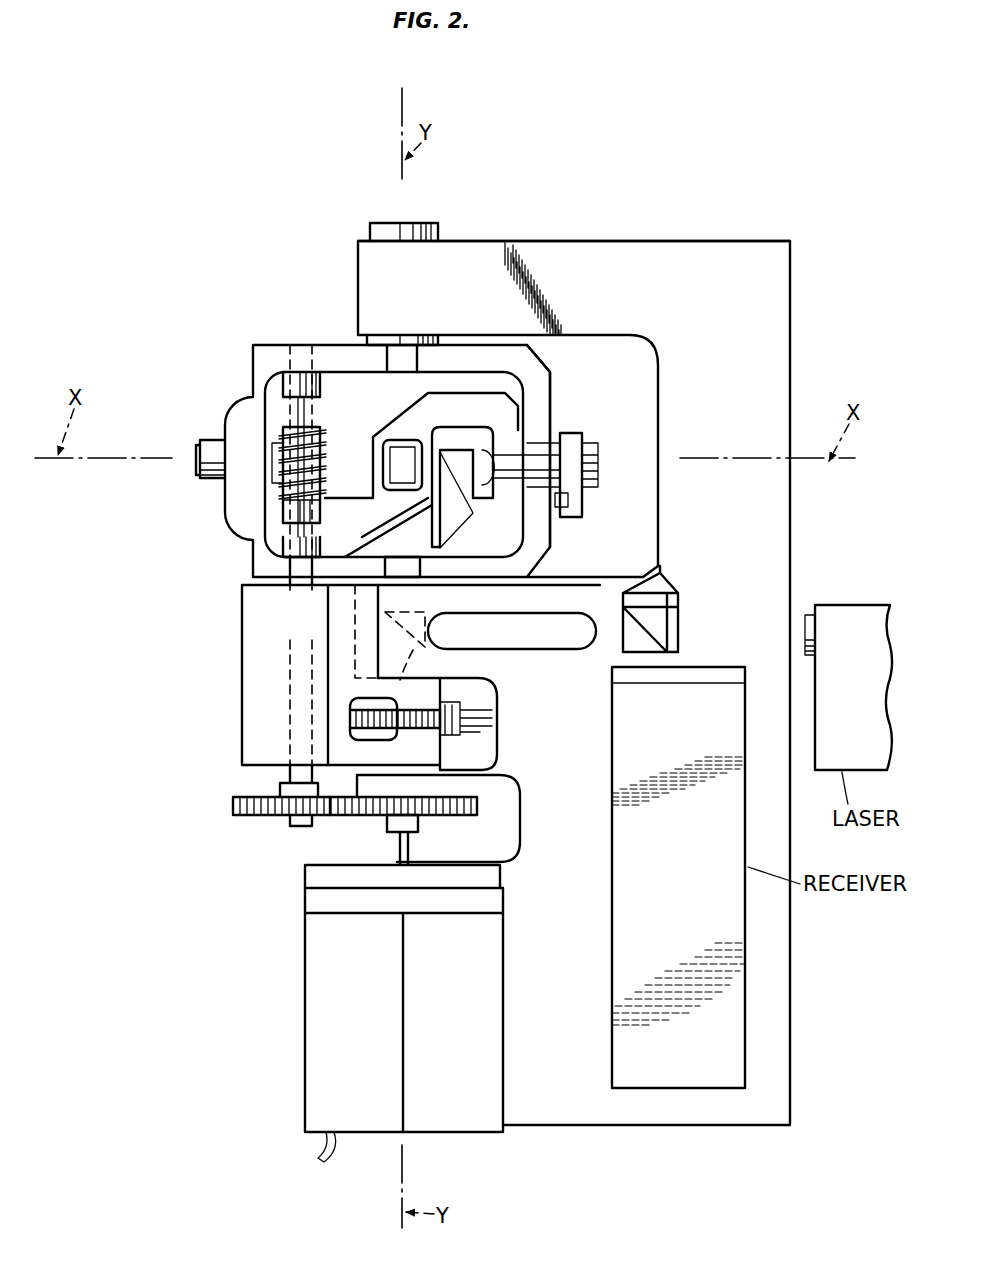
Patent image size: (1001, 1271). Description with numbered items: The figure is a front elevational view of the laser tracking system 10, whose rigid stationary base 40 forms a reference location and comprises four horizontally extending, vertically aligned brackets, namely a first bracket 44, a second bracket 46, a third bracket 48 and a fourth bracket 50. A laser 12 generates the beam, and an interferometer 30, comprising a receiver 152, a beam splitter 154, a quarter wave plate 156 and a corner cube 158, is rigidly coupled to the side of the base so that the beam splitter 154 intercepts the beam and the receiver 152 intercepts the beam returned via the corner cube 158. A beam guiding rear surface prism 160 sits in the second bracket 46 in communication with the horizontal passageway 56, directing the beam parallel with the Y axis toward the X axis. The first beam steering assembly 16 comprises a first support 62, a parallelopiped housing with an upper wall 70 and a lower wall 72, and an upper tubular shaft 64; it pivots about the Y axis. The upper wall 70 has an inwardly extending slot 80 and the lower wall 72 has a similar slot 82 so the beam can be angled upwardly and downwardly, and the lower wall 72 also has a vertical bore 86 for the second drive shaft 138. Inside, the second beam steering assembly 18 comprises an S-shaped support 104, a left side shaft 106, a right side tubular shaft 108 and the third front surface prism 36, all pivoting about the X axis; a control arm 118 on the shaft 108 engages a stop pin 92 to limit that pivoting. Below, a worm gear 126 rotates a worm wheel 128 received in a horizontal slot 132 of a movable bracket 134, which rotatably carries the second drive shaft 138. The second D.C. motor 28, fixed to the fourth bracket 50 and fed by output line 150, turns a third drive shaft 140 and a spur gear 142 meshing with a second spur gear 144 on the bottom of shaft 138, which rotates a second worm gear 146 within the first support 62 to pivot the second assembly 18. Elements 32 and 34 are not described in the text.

The system 10 is at (711, 169).
The laser 12 is at (862, 606).
The first beam steering assembly 16 is at (565, 549).
The second beam steering assembly 18 is at (342, 394).
The second D.C. motor 28 is at (305, 1068).
The interferometer 30 is at (723, 600).
The lower bushing 32 is at (418, 576).
The wedge 34 is at (474, 503).
The third front surface prism 36 is at (383, 466).
The stationary base 40 is at (743, 240).
The first bracket 44 is at (358, 257).
The second bracket 46 is at (521, 677).
The third bracket 48 is at (355, 801).
The fourth bracket 50 is at (305, 878).
The horizontal passageway 56 is at (549, 634).
The first support 62 is at (551, 371).
The upper tubular shaft 64 is at (441, 228).
The upper wall 70 is at (299, 345).
The lower wall 72 is at (258, 588).
The slot 80 is at (419, 358).
The slot 82 is at (436, 626).
The vertical bore 86 is at (282, 577).
The stop pin 92 is at (568, 503).
The second S-shaped support 104 is at (424, 400).
The left side shaft 106 is at (204, 439).
The right side tubular shaft 108 is at (591, 440).
The control arm 118 is at (583, 494).
The worm gear 126 is at (461, 746).
The worm wheel 128 is at (492, 720).
The horizontal slot 132 is at (400, 738).
The movable bracket 134 is at (242, 737).
The second drive shaft 138 is at (290, 360).
The third drive shaft 140 is at (411, 842).
The spur gear 142 is at (478, 804).
The second spur gear 144 is at (233, 811).
The second worm gear 146 is at (283, 470).
The second output line 150 is at (332, 1161).
The receiver 152 is at (745, 990).
The beam splitter 154 is at (680, 627).
The quarter wave plate 156 is at (680, 604).
The corner cube 158 is at (665, 578).
The beam guiding 45° rear surface prism 160 is at (401, 632).